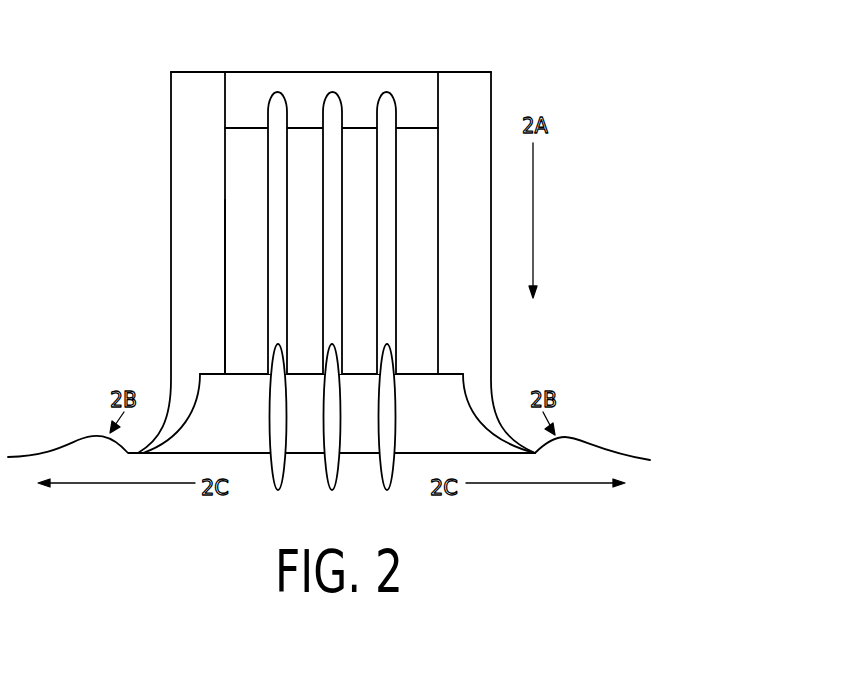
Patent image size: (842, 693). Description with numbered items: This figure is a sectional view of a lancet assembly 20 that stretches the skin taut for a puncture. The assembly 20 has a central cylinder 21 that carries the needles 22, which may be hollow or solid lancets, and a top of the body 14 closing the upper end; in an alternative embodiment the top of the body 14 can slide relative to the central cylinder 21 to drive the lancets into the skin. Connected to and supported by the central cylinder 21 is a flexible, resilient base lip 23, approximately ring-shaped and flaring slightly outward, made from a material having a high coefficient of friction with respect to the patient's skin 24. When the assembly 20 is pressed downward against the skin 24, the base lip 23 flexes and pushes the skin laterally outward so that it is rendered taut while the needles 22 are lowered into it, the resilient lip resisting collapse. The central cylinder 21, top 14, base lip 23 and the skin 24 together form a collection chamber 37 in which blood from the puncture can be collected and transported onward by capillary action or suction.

The lancet assembly 20 is at (329, 247).
The top of the body 14 is at (245, 72).
The central cylinder 21 is at (181, 112).
The needles 22 is at (279, 158).
The collection chamber 37 is at (250, 198).
The base lip 23 is at (177, 402).
The skin 24 is at (83, 452).